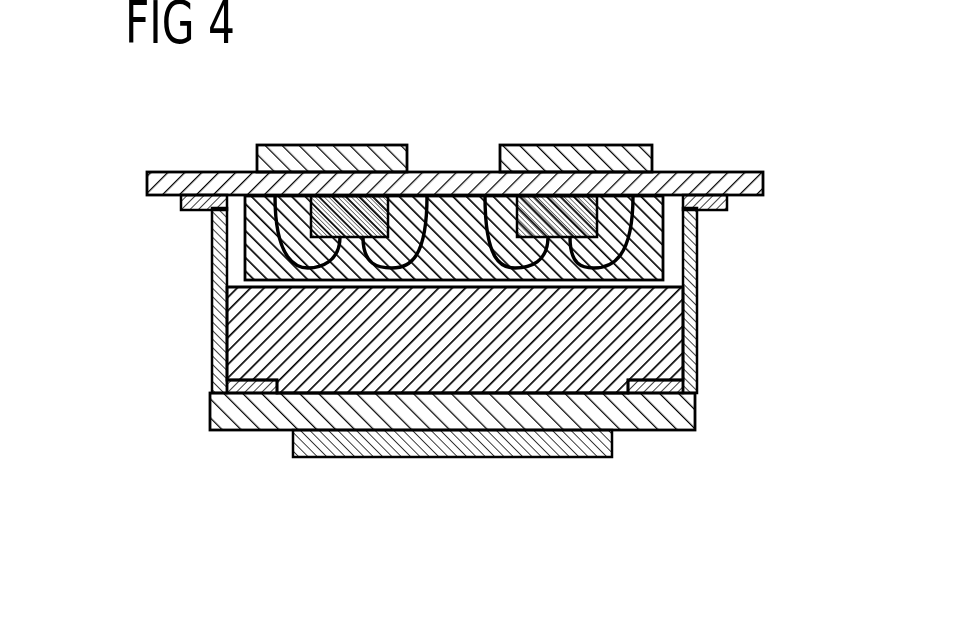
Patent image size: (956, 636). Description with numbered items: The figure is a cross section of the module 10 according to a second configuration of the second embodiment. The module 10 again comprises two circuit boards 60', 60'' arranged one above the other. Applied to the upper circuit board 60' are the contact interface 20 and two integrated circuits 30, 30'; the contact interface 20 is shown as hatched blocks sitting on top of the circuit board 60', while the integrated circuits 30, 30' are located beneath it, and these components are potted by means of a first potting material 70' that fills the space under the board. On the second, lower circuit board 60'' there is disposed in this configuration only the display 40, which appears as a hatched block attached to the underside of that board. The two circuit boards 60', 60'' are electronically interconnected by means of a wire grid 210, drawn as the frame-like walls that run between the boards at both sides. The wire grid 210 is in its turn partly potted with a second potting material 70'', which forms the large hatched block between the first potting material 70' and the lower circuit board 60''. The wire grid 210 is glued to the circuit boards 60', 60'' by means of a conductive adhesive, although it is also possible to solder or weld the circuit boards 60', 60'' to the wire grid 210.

The module 10 is at (714, 140).
The contact interface 20 is at (499, 161).
The integrated circuit 30 is at (350, 162).
The integrated circuit 30' is at (557, 162).
The display 40 is at (450, 447).
The circuit board 60' is at (455, 142).
The circuit board 60'' is at (452, 449).
The first potting material 70' is at (501, 238).
The second potting material 70'' is at (501, 340).
The wire grid 210 is at (212, 293).